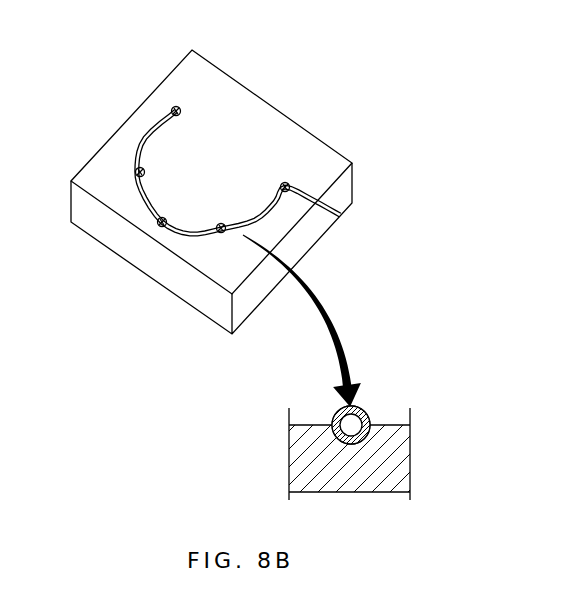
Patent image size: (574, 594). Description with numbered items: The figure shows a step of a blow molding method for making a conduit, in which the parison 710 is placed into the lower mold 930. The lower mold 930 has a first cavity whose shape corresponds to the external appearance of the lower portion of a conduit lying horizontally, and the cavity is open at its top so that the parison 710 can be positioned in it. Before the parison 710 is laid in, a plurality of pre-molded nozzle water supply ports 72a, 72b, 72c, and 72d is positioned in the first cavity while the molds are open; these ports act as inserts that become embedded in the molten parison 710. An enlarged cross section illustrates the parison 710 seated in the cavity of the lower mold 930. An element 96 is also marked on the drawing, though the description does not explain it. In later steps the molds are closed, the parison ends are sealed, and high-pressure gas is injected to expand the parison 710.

The parison 710 is at (340, 215).
The lower mold 930 is at (195, 283).
The nozzle water supply port 72a is at (182, 107).
The nozzle water supply port 72b is at (138, 168).
The nozzle water supply port 72c is at (219, 231).
The nozzle water supply port 72d is at (287, 183).
The fastener / clip 96 is at (160, 227).